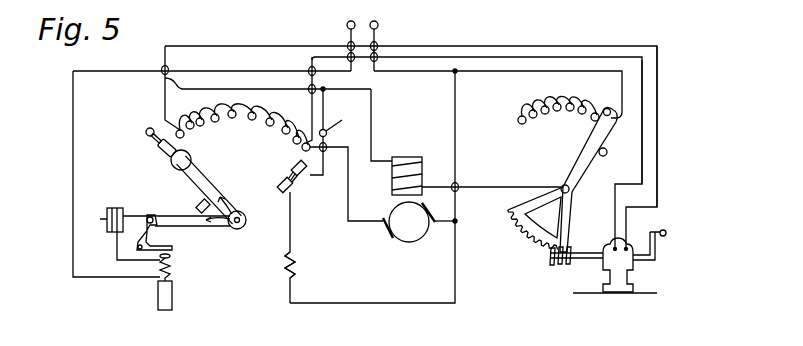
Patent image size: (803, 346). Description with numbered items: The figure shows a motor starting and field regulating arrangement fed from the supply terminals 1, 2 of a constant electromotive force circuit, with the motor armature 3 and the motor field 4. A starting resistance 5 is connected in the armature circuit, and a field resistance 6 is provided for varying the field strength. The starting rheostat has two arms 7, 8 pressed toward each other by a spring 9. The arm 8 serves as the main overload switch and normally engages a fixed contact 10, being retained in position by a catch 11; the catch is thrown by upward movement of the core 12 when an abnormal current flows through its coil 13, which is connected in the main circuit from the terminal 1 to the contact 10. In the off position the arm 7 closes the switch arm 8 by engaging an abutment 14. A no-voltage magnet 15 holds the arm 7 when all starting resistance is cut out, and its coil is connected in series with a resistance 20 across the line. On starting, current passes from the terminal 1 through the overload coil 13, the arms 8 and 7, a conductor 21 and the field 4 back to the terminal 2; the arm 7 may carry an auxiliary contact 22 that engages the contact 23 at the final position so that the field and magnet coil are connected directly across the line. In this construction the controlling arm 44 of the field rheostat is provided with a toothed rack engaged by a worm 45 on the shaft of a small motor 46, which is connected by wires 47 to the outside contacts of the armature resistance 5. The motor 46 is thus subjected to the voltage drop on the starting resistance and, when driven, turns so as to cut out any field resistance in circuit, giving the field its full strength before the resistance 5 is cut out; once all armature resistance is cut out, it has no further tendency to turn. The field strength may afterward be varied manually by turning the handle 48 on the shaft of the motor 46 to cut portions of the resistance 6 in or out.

The supply terminal 1 is at (351, 35).
The supply terminal 2 is at (374, 35).
The motor armature 3 is at (409, 222).
The motor field 4 is at (407, 168).
The starting resistance 5 is at (243, 127).
The field resistance 6 is at (558, 115).
The starting rheostat arm 7 is at (203, 183).
The overload switch arm 8 is at (173, 221).
The spring 9 is at (224, 224).
The fixed contact 10 is at (116, 210).
The catch 11 is at (147, 238).
The core 12 is at (172, 298).
The overload coil 13 is at (172, 270).
The abutment 14 is at (198, 203).
The no-voltage magnet 15 is at (299, 181).
The resistance 20 is at (302, 268).
The conductor 21 is at (164, 80).
The auxiliary contact 22 is at (146, 135).
The contact 23 is at (337, 112).
The controlling arm of the field rheostat 44 is at (578, 162).
The worm 45 is at (575, 267).
The small motor 46 is at (622, 262).
The wires 47 is at (658, 148).
The handle 48 is at (665, 231).